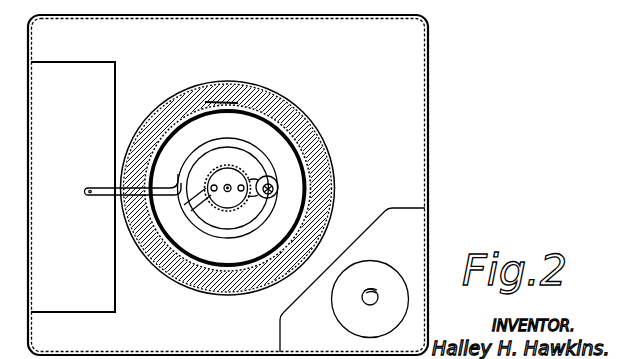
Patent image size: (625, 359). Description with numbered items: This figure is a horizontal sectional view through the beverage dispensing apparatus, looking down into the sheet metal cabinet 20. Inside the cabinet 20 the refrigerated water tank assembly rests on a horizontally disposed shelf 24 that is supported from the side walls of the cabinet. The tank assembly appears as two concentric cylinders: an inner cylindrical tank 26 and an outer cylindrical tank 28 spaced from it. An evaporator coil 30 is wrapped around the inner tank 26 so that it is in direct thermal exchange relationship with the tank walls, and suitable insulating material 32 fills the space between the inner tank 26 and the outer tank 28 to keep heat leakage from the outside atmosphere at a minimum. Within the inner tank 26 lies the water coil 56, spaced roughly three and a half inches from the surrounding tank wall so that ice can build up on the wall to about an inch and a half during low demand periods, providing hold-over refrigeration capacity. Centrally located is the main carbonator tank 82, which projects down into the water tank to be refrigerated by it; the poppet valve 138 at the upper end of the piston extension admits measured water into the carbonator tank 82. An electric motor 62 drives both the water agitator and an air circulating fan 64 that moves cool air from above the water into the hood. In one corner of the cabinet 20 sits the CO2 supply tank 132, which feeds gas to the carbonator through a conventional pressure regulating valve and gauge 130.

The sheet metal cabinet 20 is at (427, 80).
The shelf 24 is at (405, 132).
The inner cylindrical tank 26 is at (297, 145).
The outer cylindrical tank 28 is at (252, 83).
The evaporator coil 30 is at (273, 112).
The insulating material 32 is at (210, 93).
The water coil 56 is at (272, 165).
The electric motor 62 is at (272, 200).
The air circulating fan 64 is at (275, 187).
The carbonator tank 82 is at (219, 211).
The pressure regulating valve and gauge 130 is at (363, 302).
The CO2 supply tank 132 is at (376, 271).
The poppet valve 138 is at (225, 187).